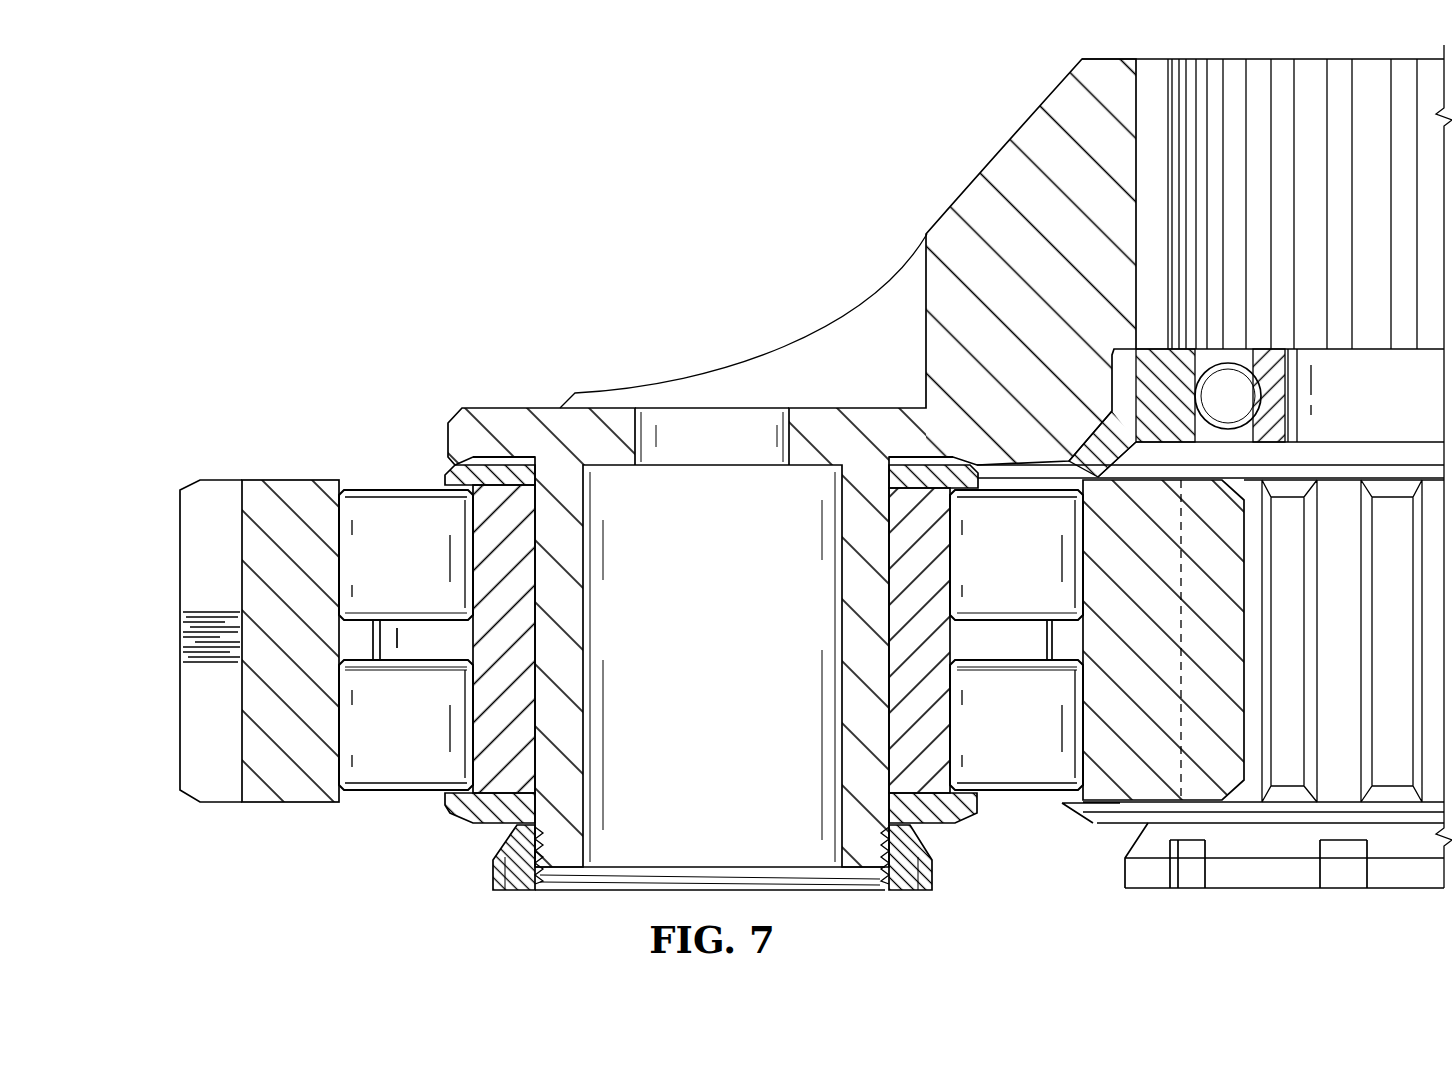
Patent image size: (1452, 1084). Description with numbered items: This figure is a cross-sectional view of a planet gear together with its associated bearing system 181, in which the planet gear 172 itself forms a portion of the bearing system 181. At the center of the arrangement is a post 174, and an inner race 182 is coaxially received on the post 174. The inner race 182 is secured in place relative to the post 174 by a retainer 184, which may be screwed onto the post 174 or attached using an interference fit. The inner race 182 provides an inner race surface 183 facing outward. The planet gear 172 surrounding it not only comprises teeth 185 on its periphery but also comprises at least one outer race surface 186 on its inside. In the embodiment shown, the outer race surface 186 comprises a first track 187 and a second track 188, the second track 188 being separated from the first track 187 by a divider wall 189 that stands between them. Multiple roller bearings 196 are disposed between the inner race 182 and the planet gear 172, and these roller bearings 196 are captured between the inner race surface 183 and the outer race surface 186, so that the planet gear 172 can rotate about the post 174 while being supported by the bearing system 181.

The bearing system 181 is at (358, 322).
The planet gear 172 is at (290, 487).
The post 174 is at (578, 604).
The inner race 182 is at (490, 705).
The inner race surface 183 is at (436, 660).
The retainer 184 is at (493, 874).
The teeth 185 is at (180, 582).
The outer race surface 186 is at (345, 516).
The first track 187 is at (345, 545).
The second track 188 is at (342, 782).
The divider wall 189 is at (372, 630).
The roller bearings 196 is at (418, 515).